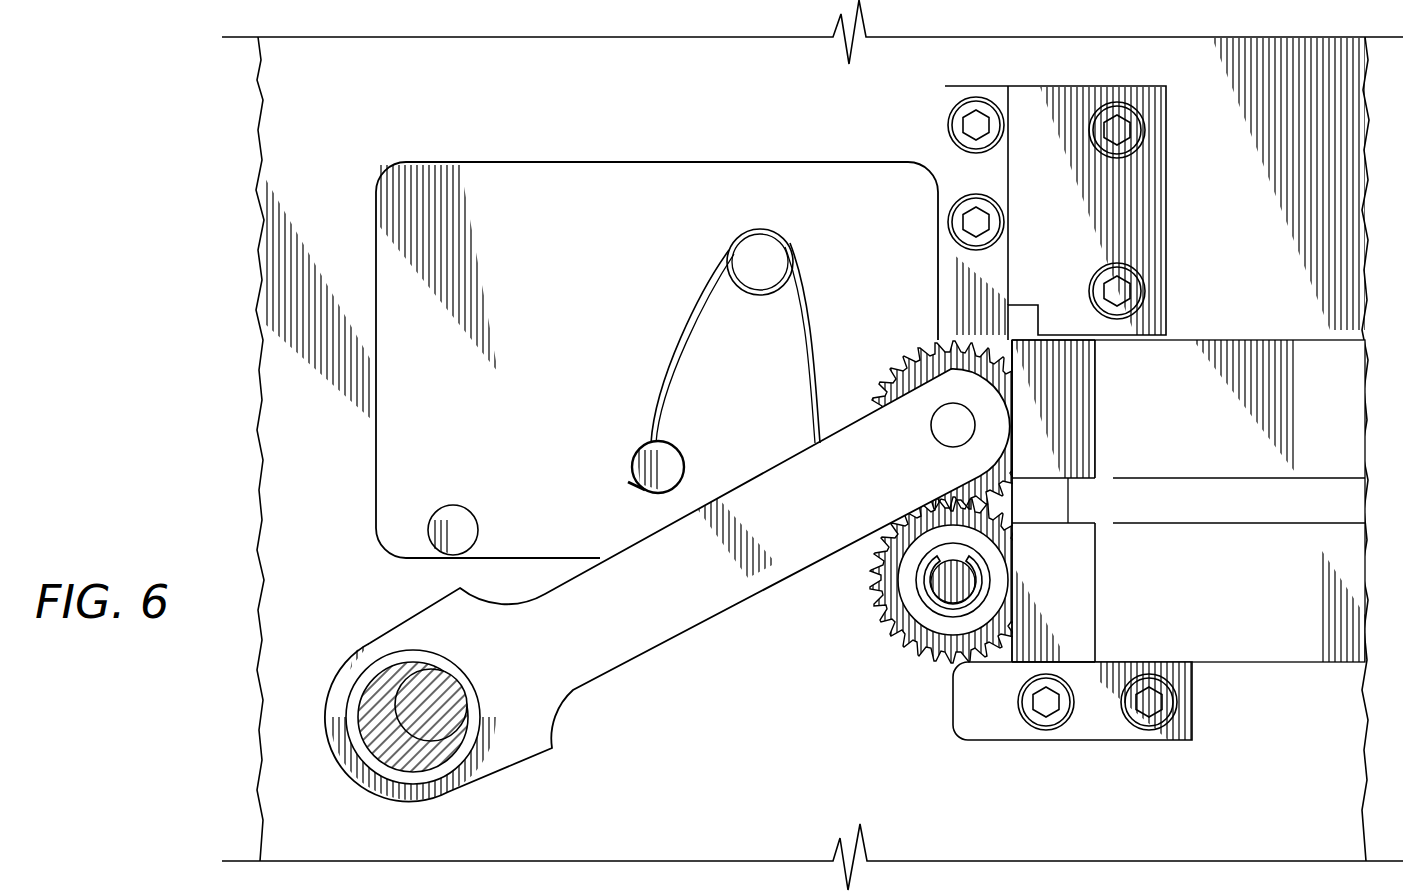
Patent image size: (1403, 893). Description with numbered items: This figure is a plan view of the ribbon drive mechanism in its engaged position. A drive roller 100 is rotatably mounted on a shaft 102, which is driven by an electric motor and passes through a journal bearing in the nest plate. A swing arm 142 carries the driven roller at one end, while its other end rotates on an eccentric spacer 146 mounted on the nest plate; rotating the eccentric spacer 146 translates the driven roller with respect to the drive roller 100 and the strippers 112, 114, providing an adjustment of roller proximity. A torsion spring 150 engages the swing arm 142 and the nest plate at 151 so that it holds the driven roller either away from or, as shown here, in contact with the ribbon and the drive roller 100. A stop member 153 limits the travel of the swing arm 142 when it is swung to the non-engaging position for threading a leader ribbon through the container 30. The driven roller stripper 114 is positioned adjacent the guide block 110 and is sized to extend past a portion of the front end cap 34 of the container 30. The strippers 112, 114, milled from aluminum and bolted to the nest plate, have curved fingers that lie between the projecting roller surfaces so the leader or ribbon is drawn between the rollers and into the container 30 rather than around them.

The container 30 is at (1242, 636).
The front end cap 34 is at (1083, 420).
The drive roller 100 is at (872, 592).
The shaft 102 is at (942, 612).
The guide block 110 is at (1143, 218).
The stripper 112 is at (978, 703).
The driven roller stripper 114 is at (962, 297).
The swing arm 142 is at (620, 642).
The eccentric spacer 146 is at (393, 745).
The torsion spring 150 is at (688, 312).
The spring engagement point 151 is at (663, 458).
The stop member 153 is at (445, 530).